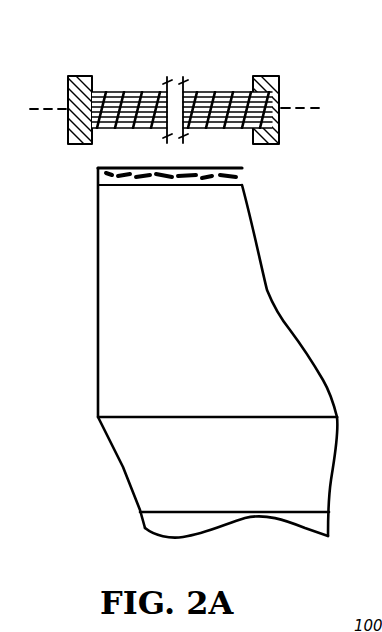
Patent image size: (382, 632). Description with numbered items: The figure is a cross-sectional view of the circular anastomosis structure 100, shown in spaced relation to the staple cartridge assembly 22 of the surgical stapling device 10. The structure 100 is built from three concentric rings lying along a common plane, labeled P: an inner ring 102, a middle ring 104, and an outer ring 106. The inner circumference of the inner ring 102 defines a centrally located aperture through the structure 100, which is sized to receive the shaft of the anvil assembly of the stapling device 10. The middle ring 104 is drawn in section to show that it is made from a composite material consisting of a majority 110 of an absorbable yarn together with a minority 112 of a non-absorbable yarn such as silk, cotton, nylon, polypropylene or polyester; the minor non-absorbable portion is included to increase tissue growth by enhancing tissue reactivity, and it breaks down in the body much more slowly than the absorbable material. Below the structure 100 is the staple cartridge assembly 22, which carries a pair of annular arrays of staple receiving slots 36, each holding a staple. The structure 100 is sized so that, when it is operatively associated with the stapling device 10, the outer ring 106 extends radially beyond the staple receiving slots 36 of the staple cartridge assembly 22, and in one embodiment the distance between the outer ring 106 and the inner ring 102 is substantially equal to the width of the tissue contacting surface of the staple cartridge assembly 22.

The anastomosis structure 100 is at (176, 85).
The inner ring 102 is at (281, 97).
The middle ring 104 is at (227, 93).
The outer ring 106 is at (62, 91).
The majority of absorbable yarn 110 is at (124, 100).
The minority of non-absorbable yarn 112 is at (163, 88).
The surgical stapling device 10 is at (217, 353).
The staple cartridge assembly 22 is at (276, 300).
The staple receiving slots 36 is at (205, 186).